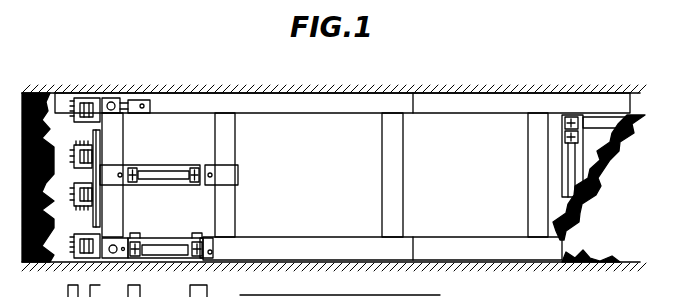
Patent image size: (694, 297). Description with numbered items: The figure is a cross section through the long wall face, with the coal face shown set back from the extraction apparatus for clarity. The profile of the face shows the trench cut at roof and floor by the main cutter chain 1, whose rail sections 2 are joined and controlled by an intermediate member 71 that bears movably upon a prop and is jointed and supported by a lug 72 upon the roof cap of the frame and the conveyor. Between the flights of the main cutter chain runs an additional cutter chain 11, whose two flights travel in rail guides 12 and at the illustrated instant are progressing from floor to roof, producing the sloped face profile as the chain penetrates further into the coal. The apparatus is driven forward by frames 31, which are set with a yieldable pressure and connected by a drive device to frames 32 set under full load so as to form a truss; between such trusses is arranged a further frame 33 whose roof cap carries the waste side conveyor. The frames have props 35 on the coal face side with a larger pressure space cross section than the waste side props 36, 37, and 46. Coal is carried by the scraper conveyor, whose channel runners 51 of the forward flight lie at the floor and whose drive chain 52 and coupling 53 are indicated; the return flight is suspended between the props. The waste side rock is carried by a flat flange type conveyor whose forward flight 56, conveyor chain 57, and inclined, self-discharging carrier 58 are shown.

The main cutter chain 1 is at (72, 108).
The rail sections 2 is at (100, 97).
The additional cutter chain 11 is at (72, 148).
The rail guides 12 is at (80, 165).
The frames 31 is at (312, 113).
The frames 32 is at (325, 285).
The frames 33 is at (473, 108).
The props 35 is at (116, 134).
The props 36 is at (230, 148).
The props 37 is at (404, 213).
The props 46 is at (100, 165).
The channel runners 51 is at (157, 185).
The drive chain 52 is at (217, 235).
The coupling 53 is at (177, 247).
The forward flight 56 is at (595, 130).
The conveyor chain 57 is at (577, 115).
The carrier 58 is at (612, 122).
The intermediate member 71 is at (127, 98).
The lug 72 is at (147, 113).